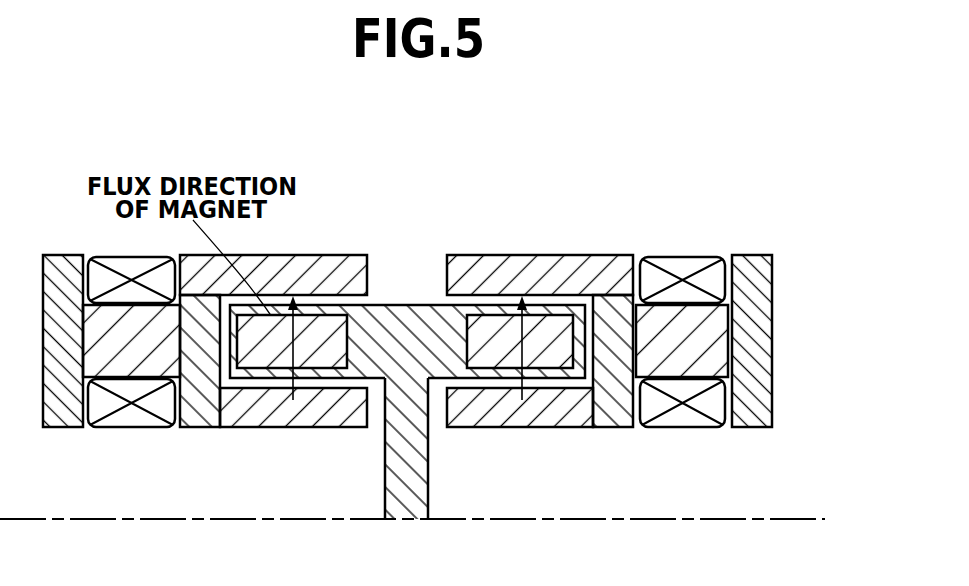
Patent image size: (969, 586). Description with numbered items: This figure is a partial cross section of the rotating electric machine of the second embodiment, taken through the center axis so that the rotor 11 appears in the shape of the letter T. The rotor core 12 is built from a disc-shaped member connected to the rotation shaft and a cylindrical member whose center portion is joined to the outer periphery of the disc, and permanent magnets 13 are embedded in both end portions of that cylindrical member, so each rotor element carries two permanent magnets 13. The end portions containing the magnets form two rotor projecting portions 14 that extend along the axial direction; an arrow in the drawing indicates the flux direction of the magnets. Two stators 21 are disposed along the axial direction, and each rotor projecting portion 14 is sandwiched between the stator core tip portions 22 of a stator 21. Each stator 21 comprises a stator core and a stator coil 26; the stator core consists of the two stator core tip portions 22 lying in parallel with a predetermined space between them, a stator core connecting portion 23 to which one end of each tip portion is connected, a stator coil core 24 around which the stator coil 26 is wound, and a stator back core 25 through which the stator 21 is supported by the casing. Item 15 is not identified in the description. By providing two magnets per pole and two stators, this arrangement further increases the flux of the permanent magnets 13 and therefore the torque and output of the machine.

The rotor 11 is at (400, 285).
The rotor core 12 is at (408, 355).
The permanent magnet 13 is at (487, 337).
The rotor projecting portion 14 is at (327, 370).
The magnet flux / rotor magnet portion 15 is at (548, 308).
The stator 21 is at (454, 326).
The stator core tip portion 22 is at (512, 272).
The stator core connecting portion 23 is at (607, 318).
The stator coil core 24 is at (667, 340).
The stator back core 25 is at (752, 303).
The stator coil 26 is at (689, 413).